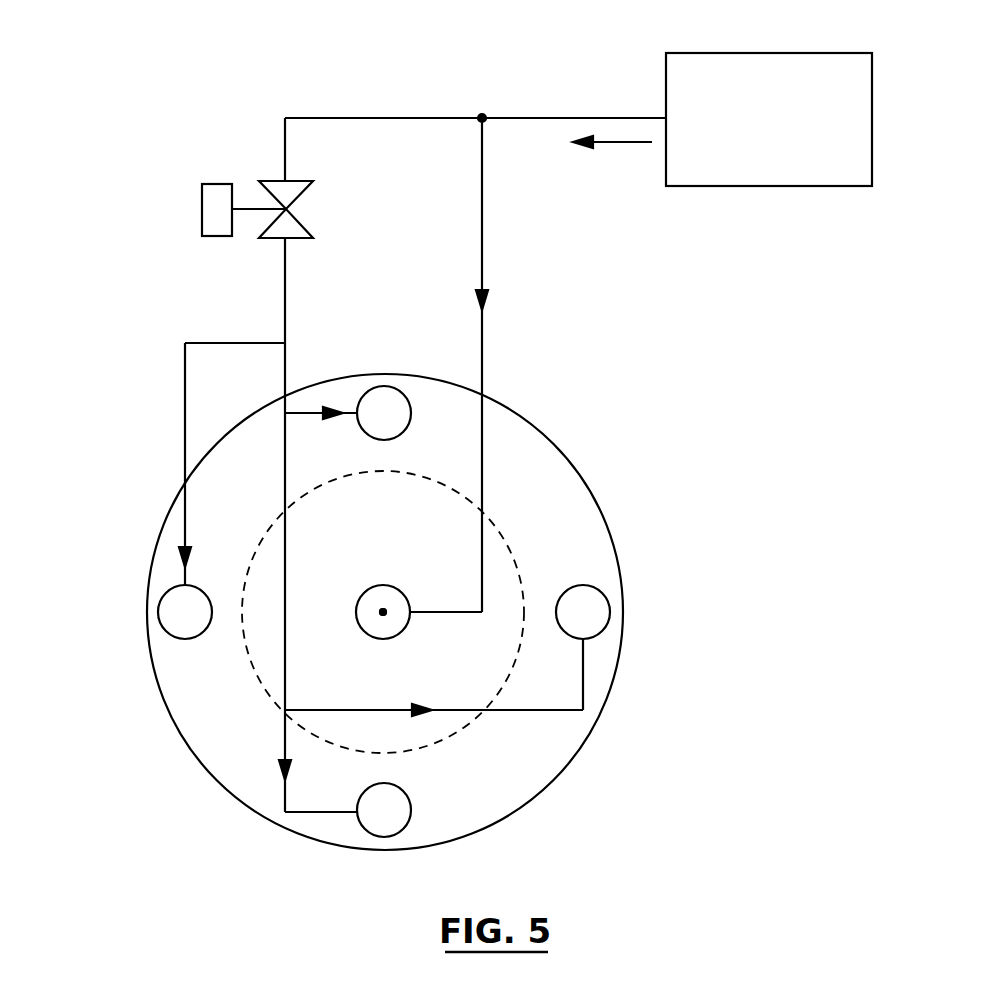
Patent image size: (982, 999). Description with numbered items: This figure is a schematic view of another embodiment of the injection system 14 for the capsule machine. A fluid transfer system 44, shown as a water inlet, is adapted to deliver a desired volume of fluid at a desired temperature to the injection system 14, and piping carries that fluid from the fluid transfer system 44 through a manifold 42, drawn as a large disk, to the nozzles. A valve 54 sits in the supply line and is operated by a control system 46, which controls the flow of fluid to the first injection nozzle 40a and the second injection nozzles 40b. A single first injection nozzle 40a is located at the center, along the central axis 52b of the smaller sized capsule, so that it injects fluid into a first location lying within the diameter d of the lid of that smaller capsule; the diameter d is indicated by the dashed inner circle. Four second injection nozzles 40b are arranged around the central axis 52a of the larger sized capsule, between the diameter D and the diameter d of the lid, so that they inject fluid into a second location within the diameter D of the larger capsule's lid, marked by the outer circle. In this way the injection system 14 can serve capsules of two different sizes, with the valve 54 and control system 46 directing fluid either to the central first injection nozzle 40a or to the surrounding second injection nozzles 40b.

The injection system 14 is at (602, 356).
The fluid transfer system 44 is at (666, 82).
The valve 54 is at (302, 222).
The control system 46 is at (222, 236).
The manifold 42 is at (560, 747).
The diameter of lid for larger sized capsule D is at (572, 457).
The diameter of lid for smaller sized capsule d is at (505, 540).
The first injection nozzle 40a is at (410, 622).
The second injection nozzles 40b is at (371, 387).
The central axis of larger capsule 52a is at (343, 562).
The central axis of smaller capsule 52b is at (383, 610).